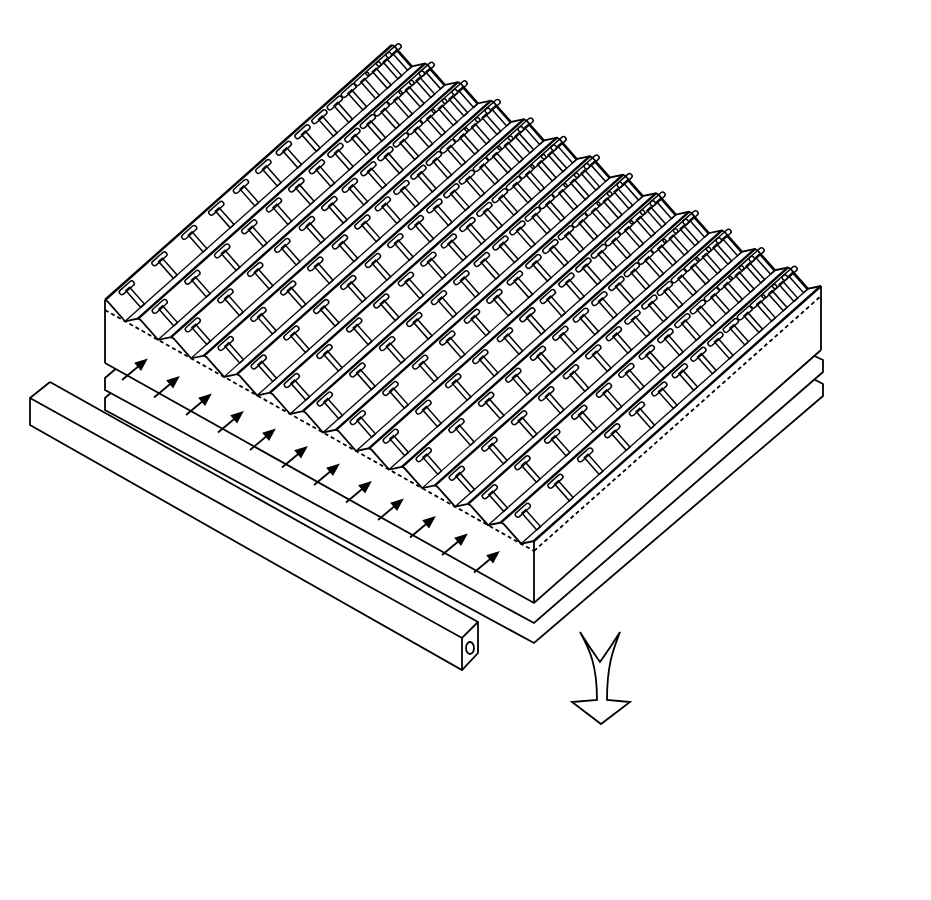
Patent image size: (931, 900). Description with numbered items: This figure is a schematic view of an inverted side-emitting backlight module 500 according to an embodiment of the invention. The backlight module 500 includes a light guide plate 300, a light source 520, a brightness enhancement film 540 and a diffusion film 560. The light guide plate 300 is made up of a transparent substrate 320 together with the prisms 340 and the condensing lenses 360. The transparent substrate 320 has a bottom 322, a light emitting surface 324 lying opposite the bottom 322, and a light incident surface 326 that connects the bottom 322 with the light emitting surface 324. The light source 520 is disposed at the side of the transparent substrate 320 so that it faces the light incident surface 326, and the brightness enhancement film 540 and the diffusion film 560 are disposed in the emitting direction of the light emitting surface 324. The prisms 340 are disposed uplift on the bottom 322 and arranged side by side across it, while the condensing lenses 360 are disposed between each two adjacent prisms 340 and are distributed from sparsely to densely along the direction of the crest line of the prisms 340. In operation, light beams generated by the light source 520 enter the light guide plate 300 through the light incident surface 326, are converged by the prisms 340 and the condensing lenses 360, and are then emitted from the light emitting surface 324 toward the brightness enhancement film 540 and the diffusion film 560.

The backlight module 500 is at (722, 52).
The light guide plate 300 is at (820, 270).
The transparent substrate 320 is at (824, 307).
The bottom 322 is at (305, 222).
The light emitting surface 324 is at (608, 548).
The light incident surface 326 is at (118, 323).
The prisms 340 is at (740, 245).
The condensing lenses 360 is at (586, 208).
The light source 520 is at (302, 575).
The brightness enhancement film 540 is at (683, 484).
The diffusion film 560 is at (752, 437).